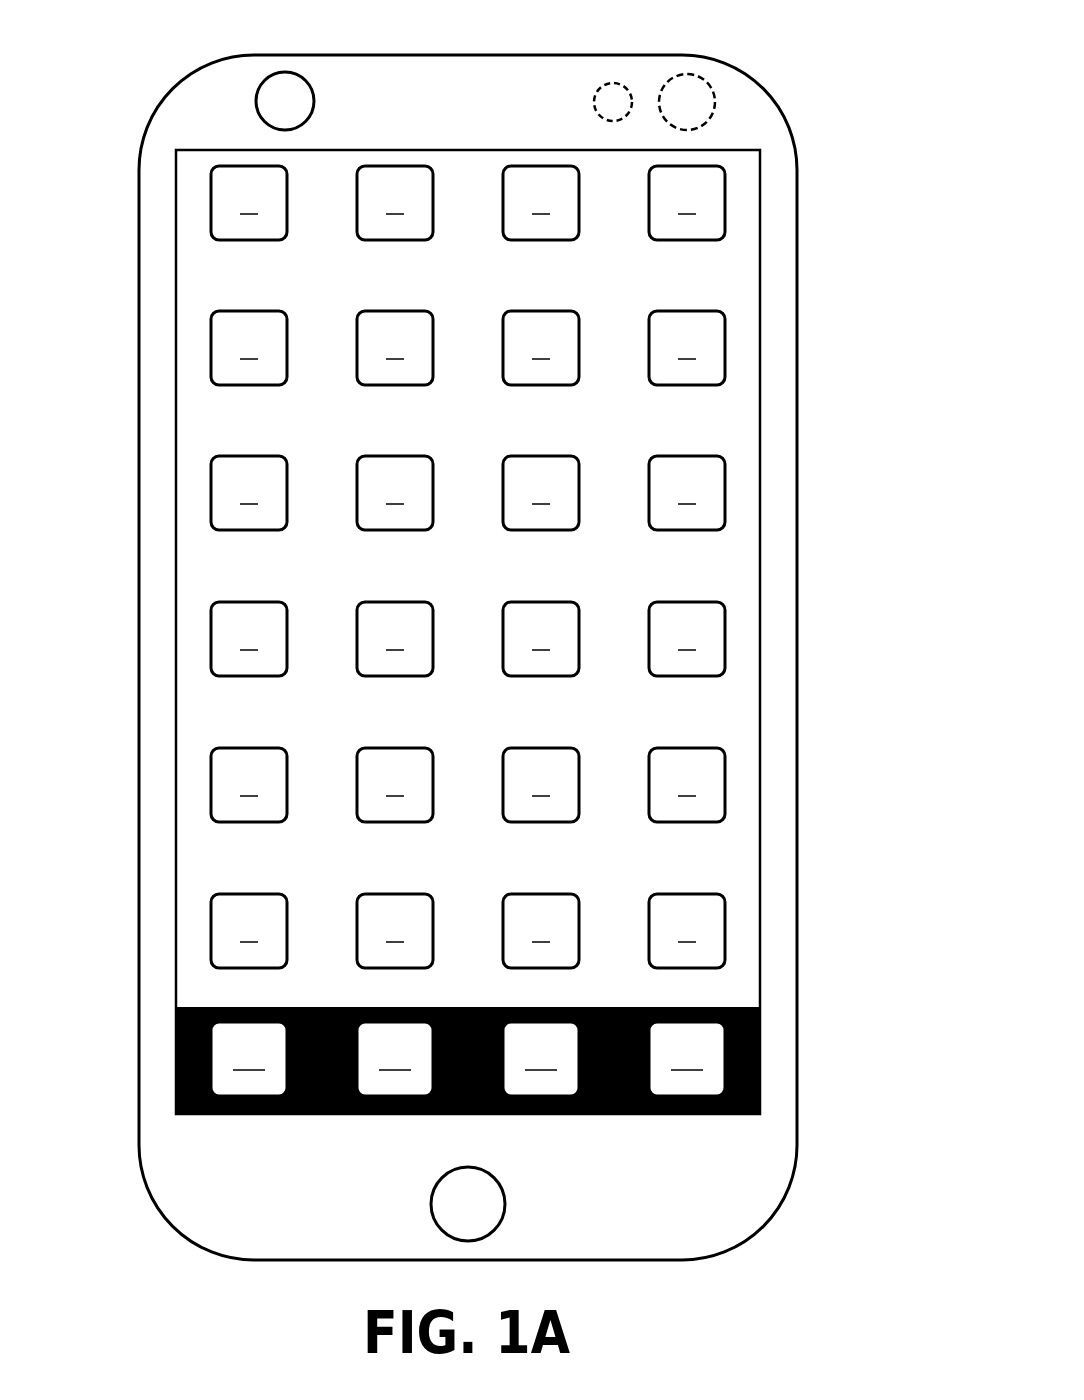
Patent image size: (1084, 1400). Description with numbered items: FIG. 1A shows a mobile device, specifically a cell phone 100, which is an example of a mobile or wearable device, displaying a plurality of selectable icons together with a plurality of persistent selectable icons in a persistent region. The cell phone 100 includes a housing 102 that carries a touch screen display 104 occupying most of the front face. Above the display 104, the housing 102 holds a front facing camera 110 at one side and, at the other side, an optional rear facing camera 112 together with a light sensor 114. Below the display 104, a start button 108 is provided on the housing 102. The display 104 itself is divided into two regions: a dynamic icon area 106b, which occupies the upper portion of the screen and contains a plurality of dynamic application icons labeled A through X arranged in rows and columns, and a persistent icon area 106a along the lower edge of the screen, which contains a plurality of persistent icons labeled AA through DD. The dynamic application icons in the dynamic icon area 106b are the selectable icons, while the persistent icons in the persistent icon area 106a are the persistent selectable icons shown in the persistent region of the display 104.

The cell phone 100 is at (845, 662).
The housing 102 is at (136, 712).
The touch screen display 104 is at (622, 1115).
The persistent icon area 106a is at (176, 1059).
The dynamic icon area 106b is at (762, 493).
The start button 108 is at (487, 1215).
The front facing camera 110 is at (284, 100).
The rear facing camera 112 is at (687, 100).
The light sensor 114 is at (613, 100).